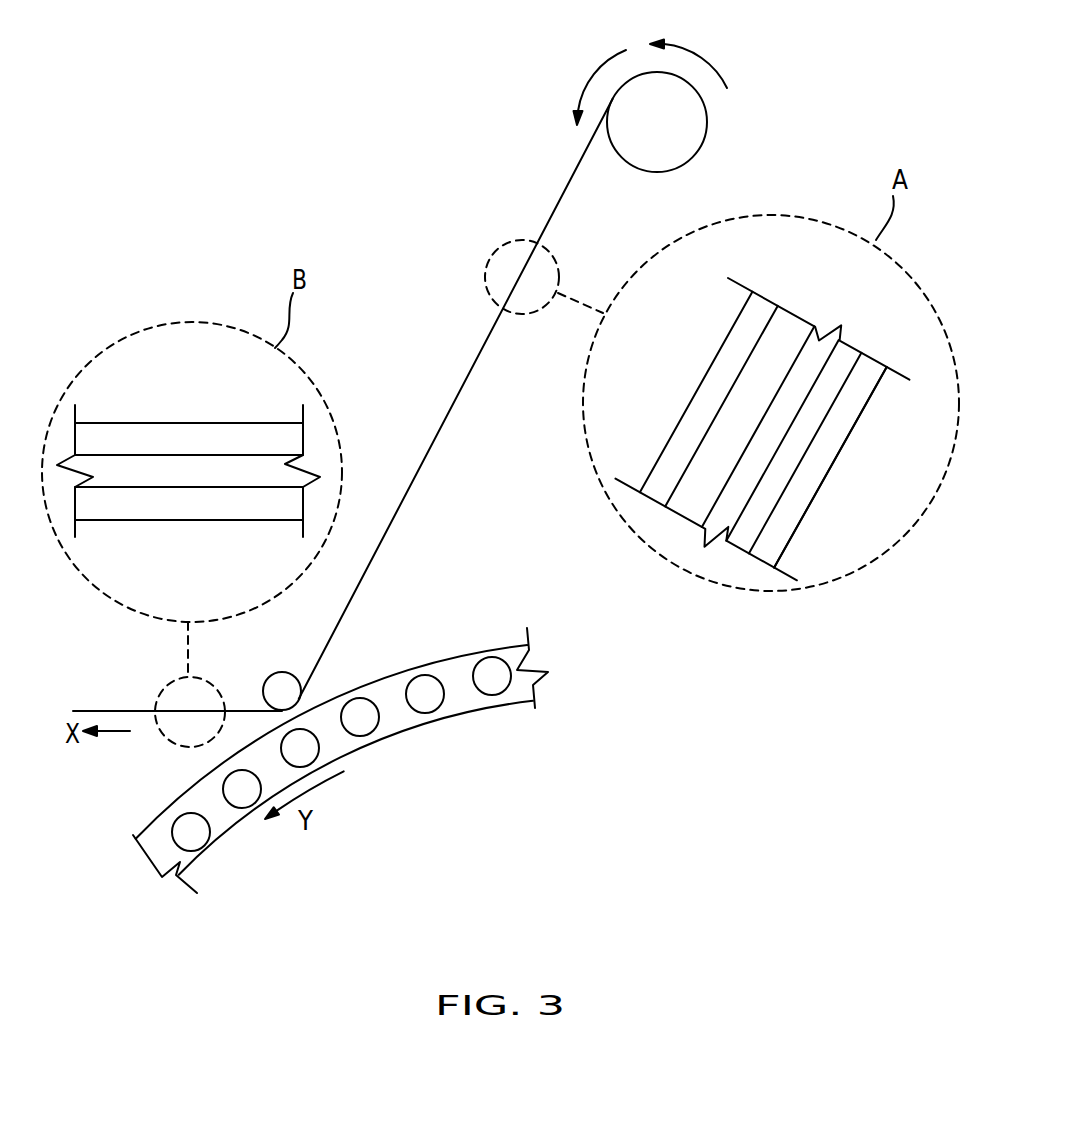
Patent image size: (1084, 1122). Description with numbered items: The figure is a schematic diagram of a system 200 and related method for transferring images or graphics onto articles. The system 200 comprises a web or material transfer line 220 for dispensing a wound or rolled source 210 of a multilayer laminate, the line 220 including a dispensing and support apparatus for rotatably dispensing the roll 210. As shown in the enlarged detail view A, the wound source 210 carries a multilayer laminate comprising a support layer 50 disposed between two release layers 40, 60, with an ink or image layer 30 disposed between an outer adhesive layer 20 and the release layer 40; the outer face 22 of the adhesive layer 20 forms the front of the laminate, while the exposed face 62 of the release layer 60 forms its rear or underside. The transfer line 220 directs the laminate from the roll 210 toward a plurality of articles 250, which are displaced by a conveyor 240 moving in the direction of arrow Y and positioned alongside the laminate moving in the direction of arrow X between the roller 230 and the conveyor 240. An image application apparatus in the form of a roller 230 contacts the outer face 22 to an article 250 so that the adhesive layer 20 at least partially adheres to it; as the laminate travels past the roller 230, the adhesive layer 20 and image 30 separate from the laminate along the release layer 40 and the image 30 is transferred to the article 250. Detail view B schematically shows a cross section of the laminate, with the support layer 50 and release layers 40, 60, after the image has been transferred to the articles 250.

The system 200 is at (194, 136).
The wound or rolled source 210 is at (688, 140).
The web or material transfer line 220 is at (562, 200).
The roller 230 is at (273, 668).
The conveyor 240 is at (393, 718).
The articles 250 is at (418, 685).
The adhesive layer 20 is at (870, 375).
The outer face of the adhesive layer 22 is at (866, 418).
The ink layer 30 is at (838, 362).
The release layer 40 is at (810, 333).
The support layer 50 is at (788, 328).
The release layer 60 is at (758, 305).
The exposed face of the release layer 62 is at (712, 358).